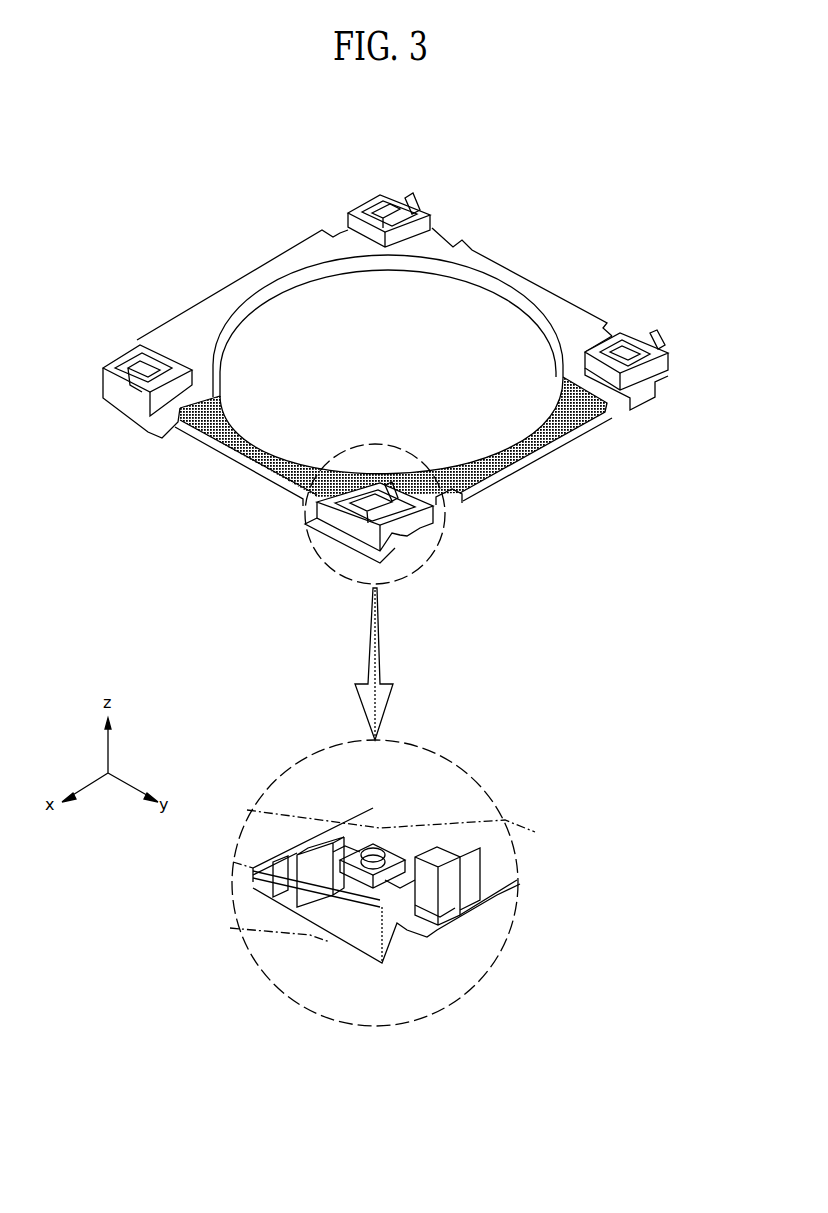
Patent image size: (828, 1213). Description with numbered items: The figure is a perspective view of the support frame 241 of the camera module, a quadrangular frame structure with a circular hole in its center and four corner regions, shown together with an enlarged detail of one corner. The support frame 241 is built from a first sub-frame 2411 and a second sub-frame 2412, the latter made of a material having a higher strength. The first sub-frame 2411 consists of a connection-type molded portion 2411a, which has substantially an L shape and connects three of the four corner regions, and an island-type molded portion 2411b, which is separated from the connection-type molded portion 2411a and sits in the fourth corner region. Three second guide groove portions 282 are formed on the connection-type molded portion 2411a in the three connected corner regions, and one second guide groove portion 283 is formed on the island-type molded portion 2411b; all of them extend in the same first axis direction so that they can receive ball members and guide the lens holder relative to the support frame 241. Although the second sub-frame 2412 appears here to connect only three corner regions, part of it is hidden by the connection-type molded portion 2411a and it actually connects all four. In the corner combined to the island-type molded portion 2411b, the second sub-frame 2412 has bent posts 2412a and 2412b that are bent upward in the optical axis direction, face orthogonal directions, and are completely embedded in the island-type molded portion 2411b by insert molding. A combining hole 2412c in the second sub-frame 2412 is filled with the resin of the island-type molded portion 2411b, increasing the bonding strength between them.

The support frame 241 is at (210, 245).
The second guide groove portions 282 is at (380, 210).
The connection-type molded portion 2411a is at (472, 250).
The island-type molded portion 2411b is at (410, 525).
The first sub-frame 2411 is at (640, 605).
The second sub-frame 2412 is at (245, 445).
The bent post 2412a is at (450, 893).
The bent post 2412b is at (312, 893).
The combining hole 2412c is at (373, 853).
The second guide groove portion 283 is at (463, 497).